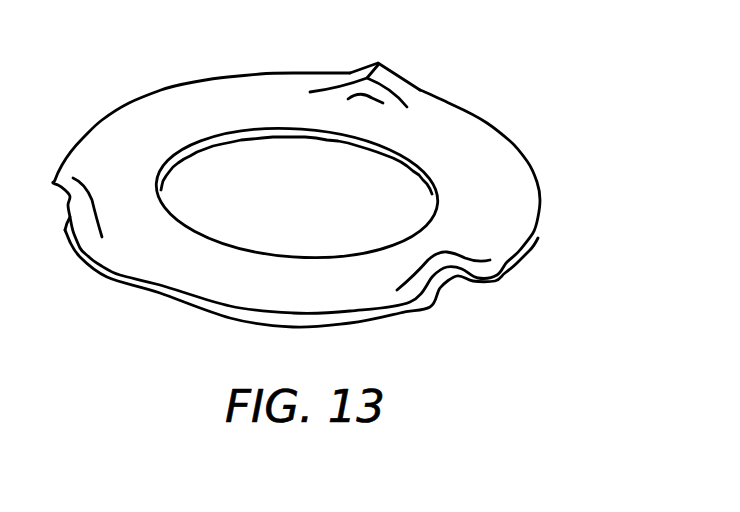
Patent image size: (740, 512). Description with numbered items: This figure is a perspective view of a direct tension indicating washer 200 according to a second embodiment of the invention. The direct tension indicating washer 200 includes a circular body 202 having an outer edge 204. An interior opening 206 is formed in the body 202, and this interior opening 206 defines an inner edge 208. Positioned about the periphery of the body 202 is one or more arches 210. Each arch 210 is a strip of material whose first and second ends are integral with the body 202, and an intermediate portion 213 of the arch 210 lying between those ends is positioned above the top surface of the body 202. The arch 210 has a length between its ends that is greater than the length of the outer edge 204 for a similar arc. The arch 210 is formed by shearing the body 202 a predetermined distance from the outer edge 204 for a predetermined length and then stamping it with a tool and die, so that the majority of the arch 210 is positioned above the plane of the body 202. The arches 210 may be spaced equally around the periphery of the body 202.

The direct tension indicating washer 200 is at (206, 326).
The circular body 202 is at (505, 158).
The outer edge 204 is at (534, 238).
The interior opening 206 is at (400, 156).
The inner edge 208 is at (390, 187).
The arch 210 is at (379, 64).
The intermediate portion 213 is at (452, 272).